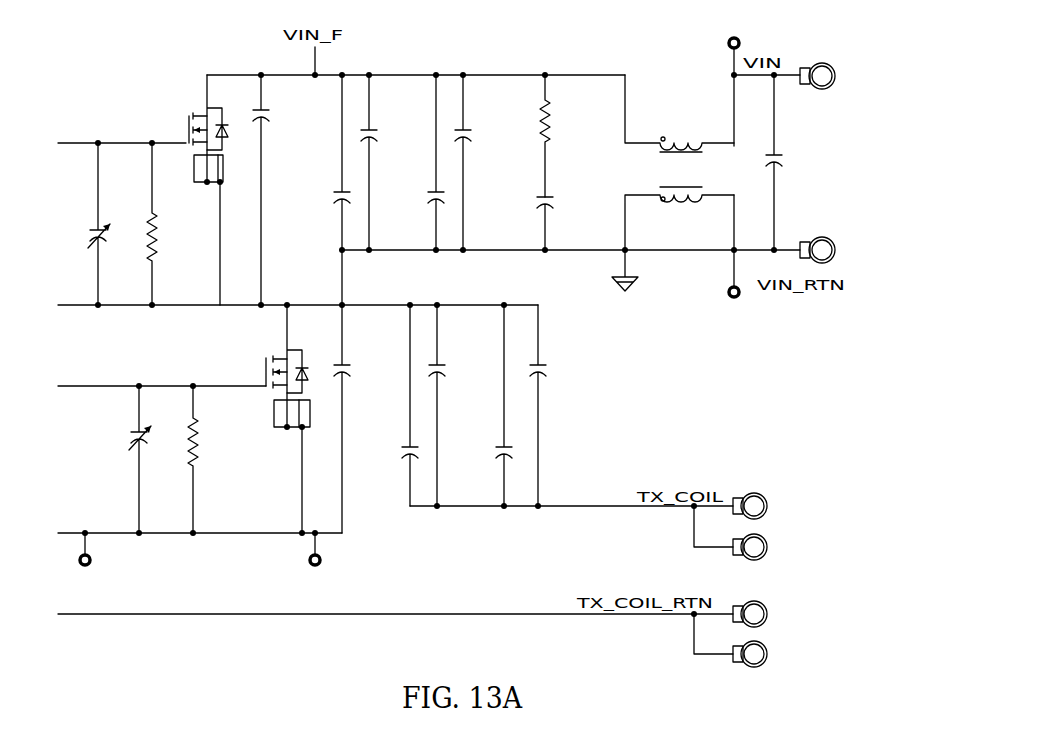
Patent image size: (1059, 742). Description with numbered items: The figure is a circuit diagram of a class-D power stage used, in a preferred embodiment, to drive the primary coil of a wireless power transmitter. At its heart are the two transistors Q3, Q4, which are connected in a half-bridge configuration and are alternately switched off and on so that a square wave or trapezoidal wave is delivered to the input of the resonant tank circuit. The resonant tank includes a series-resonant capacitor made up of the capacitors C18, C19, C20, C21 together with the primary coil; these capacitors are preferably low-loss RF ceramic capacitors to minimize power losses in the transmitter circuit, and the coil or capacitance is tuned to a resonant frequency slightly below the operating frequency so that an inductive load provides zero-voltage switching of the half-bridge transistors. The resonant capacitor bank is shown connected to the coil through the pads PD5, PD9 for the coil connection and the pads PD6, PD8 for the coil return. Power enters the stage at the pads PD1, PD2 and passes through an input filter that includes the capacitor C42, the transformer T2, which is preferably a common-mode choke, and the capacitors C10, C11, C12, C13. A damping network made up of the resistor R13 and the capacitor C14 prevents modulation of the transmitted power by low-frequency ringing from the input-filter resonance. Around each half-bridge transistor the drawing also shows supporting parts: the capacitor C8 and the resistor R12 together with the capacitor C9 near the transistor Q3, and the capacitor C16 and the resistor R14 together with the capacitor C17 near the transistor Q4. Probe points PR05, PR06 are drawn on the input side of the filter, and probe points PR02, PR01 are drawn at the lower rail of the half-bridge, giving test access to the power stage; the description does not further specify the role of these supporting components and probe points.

The transistor Q3 is at (149, 190).
The transistor Q4 is at (236, 417).
The capacitor C8 is at (109, 224).
The resistor R12 (20K5) R12 is at (176, 224).
The capacitor C9 (22P 100V) C9 is at (284, 190).
The capacitor C10 is at (317, 190).
The capacitor C11 is at (392, 162).
The capacitor C12 is at (412, 162).
The capacitor C13 is at (486, 162).
The resistor R13 is at (572, 134).
The capacitor C14 is at (567, 212).
The transformer T2 is at (678, 164).
The capacitor C42 is at (797, 162).
The probe point PR05 is at (741, 79).
The probe point PR06 is at (741, 255).
The pad connector PD1 (VIN) PD1 is at (820, 63).
The pad connector PD2 (VIN_RTN) PD2 is at (815, 234).
The capacitor C16 is at (148, 459).
The resistor R14 (20K5) R14 is at (215, 459).
The capacitor C17 (22P 100V) C17 is at (369, 419).
The capacitor C18 is at (385, 404).
The capacitor C19 is at (461, 405).
The capacitor C20 is at (479, 405).
The capacitor C21 is at (561, 407).
The probe point PR02 is at (91, 558).
The probe point PR01 is at (321, 558).
The pad connector PD5 (TX_COIL) PD5 is at (773, 506).
The pad connector PD9 (TX_COIL) PD9 is at (770, 547).
The pad connector PD6 (TX_COIL_RTN) PD6 is at (770, 614).
The pad connector PD8 (TX_COIL_RTN) PD8 is at (770, 654).